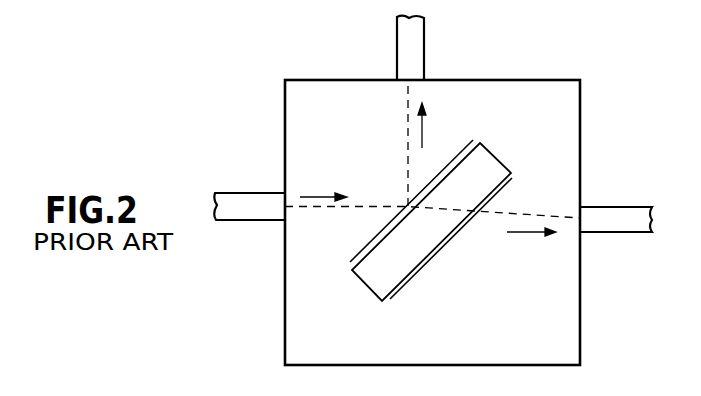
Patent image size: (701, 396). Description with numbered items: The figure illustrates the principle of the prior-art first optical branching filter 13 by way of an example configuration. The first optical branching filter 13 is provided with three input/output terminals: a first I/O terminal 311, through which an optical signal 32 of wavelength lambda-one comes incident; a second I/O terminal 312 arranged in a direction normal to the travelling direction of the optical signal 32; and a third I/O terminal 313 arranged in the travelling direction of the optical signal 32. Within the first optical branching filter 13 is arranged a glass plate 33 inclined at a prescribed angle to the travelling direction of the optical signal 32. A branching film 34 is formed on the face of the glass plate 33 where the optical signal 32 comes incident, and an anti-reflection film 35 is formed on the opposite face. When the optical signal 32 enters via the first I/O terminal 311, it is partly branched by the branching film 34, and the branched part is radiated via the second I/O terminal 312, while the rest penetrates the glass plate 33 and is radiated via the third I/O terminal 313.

The first optical branching filter 13 is at (285, 313).
The first I/O terminal 311 is at (267, 193).
The second I/O terminal 312 is at (405, 50).
The third I/O terminal 313 is at (617, 222).
The optical signal 32 is at (333, 208).
The glass plate 33 is at (483, 165).
The branching film 34 is at (472, 146).
The anti-reflection film 35 is at (502, 193).